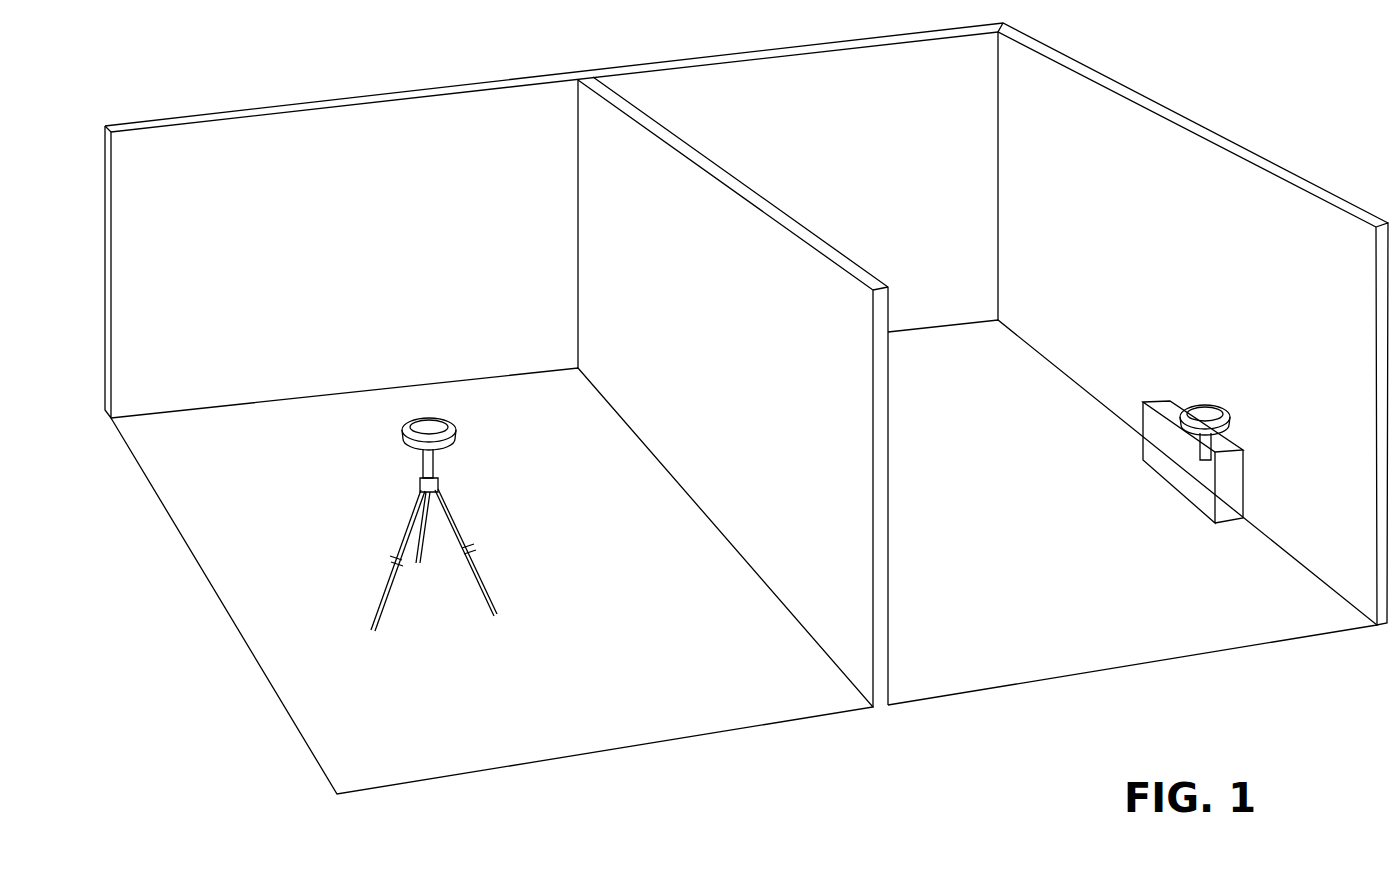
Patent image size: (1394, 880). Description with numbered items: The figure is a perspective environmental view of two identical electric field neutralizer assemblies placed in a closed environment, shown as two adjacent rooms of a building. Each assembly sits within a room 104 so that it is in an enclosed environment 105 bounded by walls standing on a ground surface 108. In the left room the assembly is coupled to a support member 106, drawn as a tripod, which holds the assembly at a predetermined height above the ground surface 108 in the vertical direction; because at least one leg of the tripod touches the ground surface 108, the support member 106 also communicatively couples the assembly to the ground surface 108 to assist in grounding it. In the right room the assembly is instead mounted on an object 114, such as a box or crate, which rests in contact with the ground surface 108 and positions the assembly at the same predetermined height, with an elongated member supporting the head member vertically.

The room 104 is at (250, 92).
The enclosed environment 105 is at (163, 438).
The support member 106 is at (365, 575).
The ground surface 108 is at (578, 718).
The object 114 is at (1232, 485).